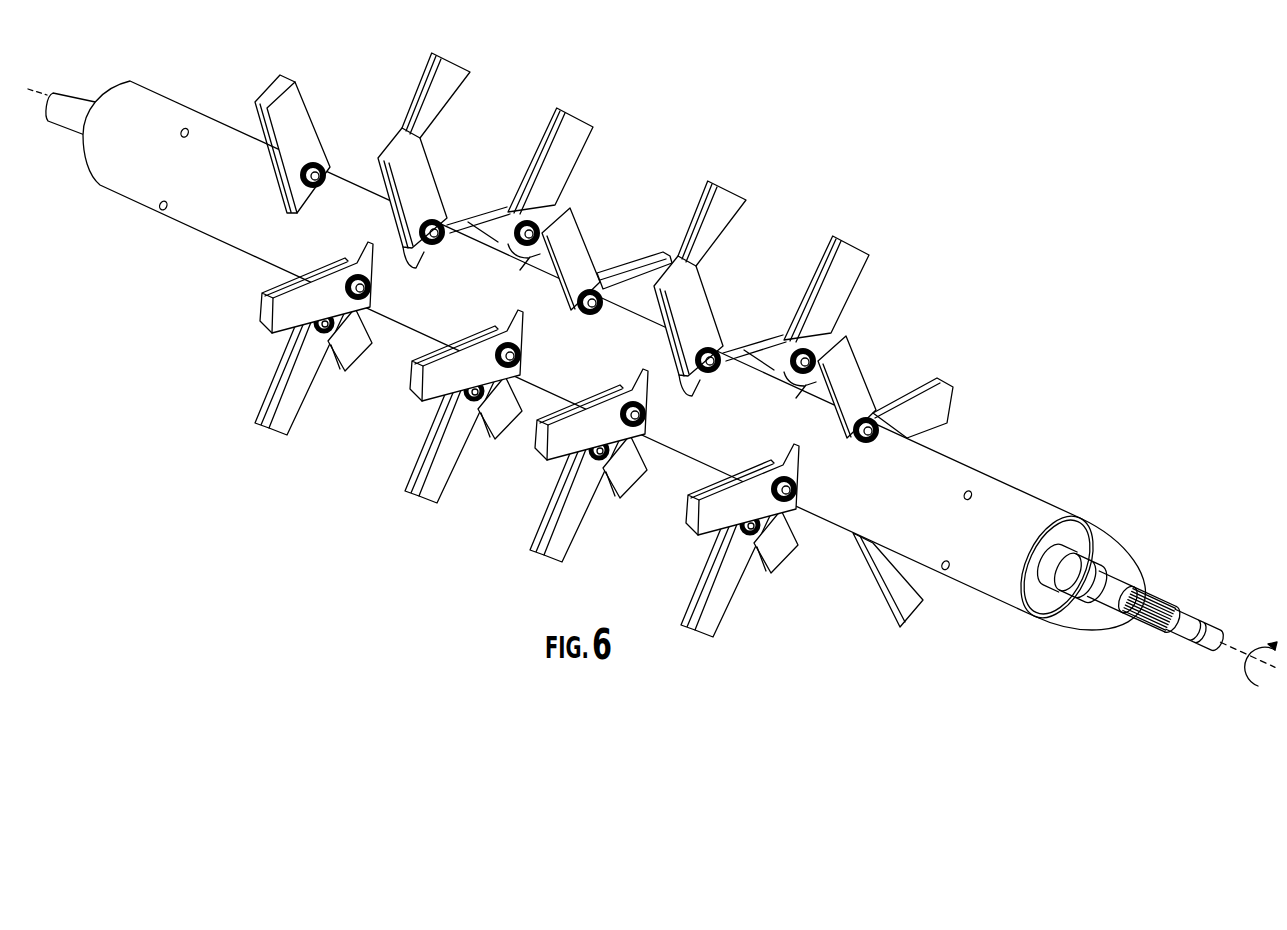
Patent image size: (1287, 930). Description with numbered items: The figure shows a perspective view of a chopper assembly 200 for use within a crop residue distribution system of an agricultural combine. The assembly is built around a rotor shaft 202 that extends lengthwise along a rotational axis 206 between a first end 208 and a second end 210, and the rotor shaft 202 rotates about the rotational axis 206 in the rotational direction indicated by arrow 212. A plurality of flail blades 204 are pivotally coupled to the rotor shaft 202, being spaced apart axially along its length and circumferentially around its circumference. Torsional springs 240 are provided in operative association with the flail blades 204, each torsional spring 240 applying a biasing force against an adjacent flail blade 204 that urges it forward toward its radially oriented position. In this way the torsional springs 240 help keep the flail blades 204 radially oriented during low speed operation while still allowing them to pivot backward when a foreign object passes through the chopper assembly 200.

The chopper assembly 200 is at (1093, 239).
The rotor shaft 202 is at (988, 572).
The flail blades 204 is at (680, 380).
The rotational axis 206 is at (1233, 640).
The first end 208 is at (1183, 620).
The second end 210 is at (78, 100).
The rotational direction arrow 212 is at (1243, 681).
The torsional springs 240 is at (853, 463).